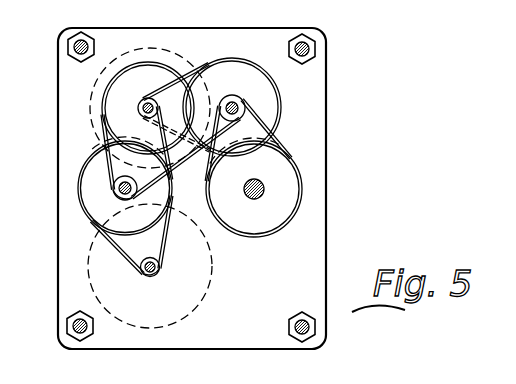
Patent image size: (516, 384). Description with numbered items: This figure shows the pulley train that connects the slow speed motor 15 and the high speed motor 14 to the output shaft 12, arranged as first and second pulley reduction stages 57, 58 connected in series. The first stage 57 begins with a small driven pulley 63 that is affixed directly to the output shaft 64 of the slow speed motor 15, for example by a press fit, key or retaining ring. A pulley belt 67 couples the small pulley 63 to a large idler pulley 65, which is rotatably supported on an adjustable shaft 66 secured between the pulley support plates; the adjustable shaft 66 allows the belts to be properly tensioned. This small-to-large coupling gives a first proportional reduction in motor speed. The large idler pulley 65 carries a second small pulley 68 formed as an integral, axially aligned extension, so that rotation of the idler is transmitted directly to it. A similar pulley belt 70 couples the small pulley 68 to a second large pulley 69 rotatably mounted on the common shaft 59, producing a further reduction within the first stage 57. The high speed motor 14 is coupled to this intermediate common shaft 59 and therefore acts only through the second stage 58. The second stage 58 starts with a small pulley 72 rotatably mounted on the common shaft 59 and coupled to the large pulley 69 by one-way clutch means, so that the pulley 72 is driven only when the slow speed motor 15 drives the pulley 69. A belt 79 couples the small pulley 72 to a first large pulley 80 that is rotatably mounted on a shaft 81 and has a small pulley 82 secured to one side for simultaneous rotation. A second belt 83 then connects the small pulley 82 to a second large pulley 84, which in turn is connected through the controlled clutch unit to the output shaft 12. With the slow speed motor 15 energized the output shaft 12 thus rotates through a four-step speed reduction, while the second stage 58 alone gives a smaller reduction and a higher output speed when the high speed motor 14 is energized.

The output shaft 12 is at (262, 196).
The high speed motor 14 is at (156, 46).
The slow speed motor 15 is at (213, 297).
The first pulley reduction stage 57 is at (75, 156).
The second pulley reduction stage 58 is at (253, 55).
The common shaft 59 is at (148, 98).
The small driven pulley 63 is at (158, 276).
The output shaft of the slow speed motor 64 is at (143, 276).
The large idler pulley 65 is at (167, 246).
The adjustable shaft 66 is at (113, 188).
The pulley belt 67 is at (99, 227).
The second small pulley 68 is at (173, 176).
The second large pulley 69 is at (98, 113).
The pulley belt 70 is at (106, 88).
The small pulley 72 is at (161, 91).
The belt 79 is at (282, 96).
The first large pulley 80 is at (247, 100).
The shaft 81 is at (249, 97).
The small pulley 82 is at (221, 141).
The second belt 83 is at (278, 142).
The second large pulley 84 is at (273, 232).